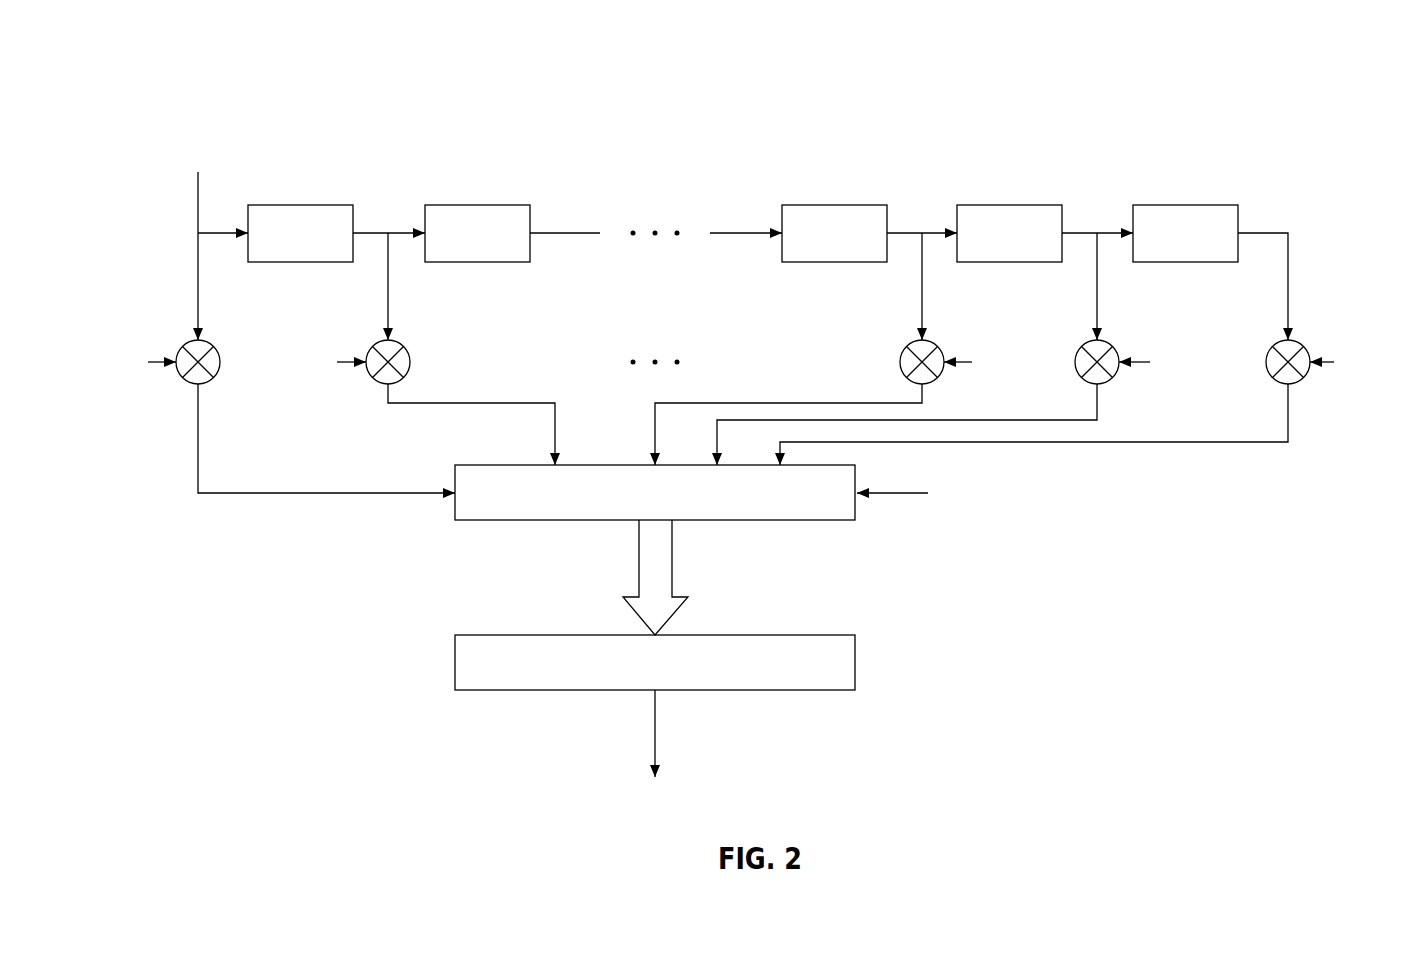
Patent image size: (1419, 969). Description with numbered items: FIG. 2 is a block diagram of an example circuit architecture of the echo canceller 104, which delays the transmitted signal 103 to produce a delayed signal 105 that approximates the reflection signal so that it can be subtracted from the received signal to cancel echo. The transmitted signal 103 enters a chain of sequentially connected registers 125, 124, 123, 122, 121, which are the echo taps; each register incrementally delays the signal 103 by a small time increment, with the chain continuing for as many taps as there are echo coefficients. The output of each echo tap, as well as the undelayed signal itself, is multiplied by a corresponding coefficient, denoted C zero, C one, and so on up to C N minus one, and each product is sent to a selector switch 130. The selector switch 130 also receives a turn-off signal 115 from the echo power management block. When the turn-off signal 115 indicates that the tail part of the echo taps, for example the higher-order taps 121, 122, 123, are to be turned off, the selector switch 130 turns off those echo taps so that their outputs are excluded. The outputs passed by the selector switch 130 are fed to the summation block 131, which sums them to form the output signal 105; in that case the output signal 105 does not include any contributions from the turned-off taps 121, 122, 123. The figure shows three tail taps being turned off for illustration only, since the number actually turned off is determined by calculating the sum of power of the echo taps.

The echo canceller 104 is at (202, 70).
The transmitted signal 103 is at (198, 226).
The delayed signal 105 is at (655, 728).
The turn-off signal 115 is at (900, 494).
The register 121 is at (1183, 205).
The register 122 is at (1008, 205).
The register 123 is at (833, 205).
The register 124 is at (475, 205).
The register 125 is at (300, 205).
The selector switch 130 is at (528, 465).
The summation block 131 is at (528, 635).